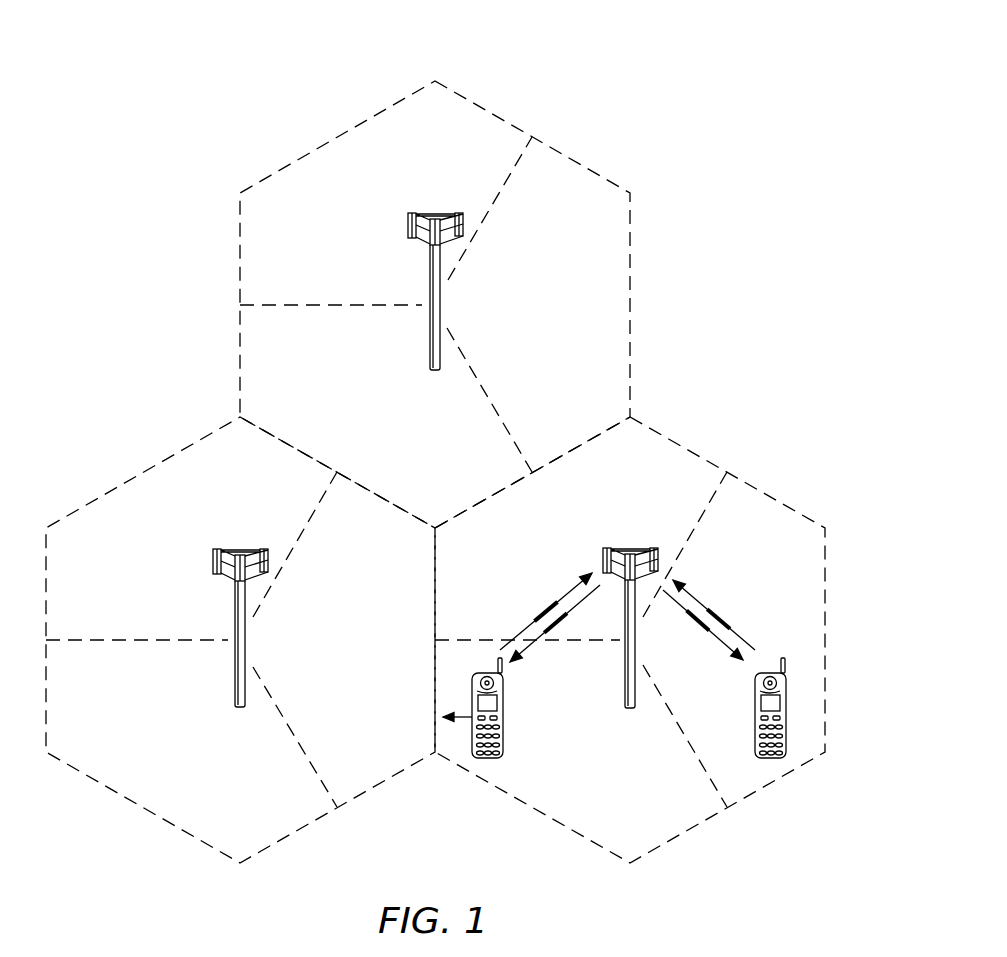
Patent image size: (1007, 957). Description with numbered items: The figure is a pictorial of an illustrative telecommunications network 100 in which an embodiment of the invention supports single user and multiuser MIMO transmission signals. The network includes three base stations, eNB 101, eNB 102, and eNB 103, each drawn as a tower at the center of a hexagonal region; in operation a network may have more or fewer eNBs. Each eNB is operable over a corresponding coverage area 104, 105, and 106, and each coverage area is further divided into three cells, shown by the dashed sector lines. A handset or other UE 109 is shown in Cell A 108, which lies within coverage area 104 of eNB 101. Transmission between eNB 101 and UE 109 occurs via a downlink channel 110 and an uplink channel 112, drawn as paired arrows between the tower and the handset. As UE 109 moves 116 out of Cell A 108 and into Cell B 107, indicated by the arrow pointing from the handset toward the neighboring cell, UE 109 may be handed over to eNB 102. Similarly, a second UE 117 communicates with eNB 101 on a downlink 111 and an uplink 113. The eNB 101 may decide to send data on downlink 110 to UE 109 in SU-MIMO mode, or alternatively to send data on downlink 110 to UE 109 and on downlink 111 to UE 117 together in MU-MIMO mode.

The telecommunications network 100 is at (614, 88).
The eNB 101 is at (622, 680).
The eNB 102 is at (235, 670).
The eNB 103 is at (430, 333).
The coverage area 104 is at (760, 790).
The coverage area 105 is at (145, 808).
The coverage area 106 is at (630, 305).
The Cell B 107 is at (389, 750).
The Cell A 108 is at (635, 819).
The UE 109 is at (503, 725).
The downlink channel 110 is at (553, 626).
The downlink 111 is at (715, 637).
The uplink channel 112 is at (563, 594).
The uplink 113 is at (687, 593).
The movement of UE 116 is at (466, 717).
The UE 117 is at (782, 658).